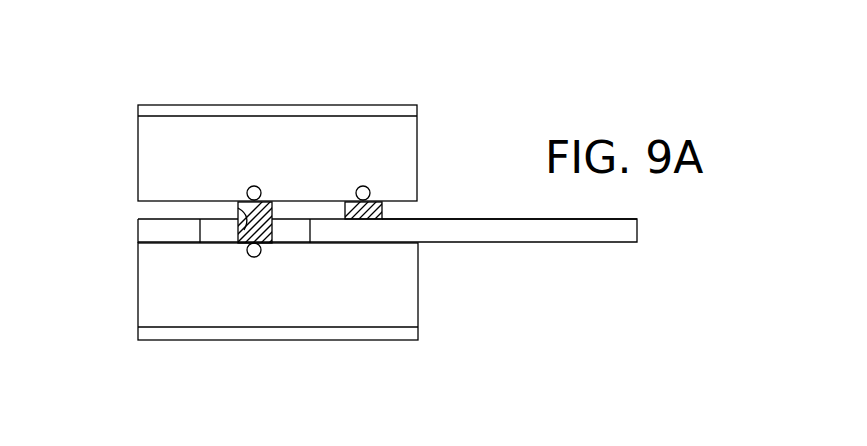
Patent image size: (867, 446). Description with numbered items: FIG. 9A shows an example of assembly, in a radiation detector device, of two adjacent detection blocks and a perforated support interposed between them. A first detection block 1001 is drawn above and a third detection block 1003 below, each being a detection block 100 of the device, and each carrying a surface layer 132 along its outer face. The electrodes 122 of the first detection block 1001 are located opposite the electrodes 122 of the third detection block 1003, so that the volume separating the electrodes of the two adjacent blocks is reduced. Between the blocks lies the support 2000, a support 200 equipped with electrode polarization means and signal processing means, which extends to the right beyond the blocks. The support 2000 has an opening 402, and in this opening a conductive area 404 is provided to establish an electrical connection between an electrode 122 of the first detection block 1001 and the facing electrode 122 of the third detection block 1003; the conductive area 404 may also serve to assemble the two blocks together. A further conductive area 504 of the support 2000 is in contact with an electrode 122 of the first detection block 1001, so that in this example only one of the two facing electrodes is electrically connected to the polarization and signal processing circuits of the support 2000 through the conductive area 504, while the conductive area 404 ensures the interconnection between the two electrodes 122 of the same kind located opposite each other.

The first detection block 1001 is at (148, 172).
The third detection block 1003 is at (153, 288).
The detection block 100 is at (333, 222).
The surface layer 132 is at (223, 107).
The electrode 122 is at (256, 185).
The opening 402 is at (238, 209).
The conductive area 404 is at (273, 232).
The conductive area 504 is at (371, 214).
The support 2000 is at (577, 235).
The support 200 is at (400, 265).